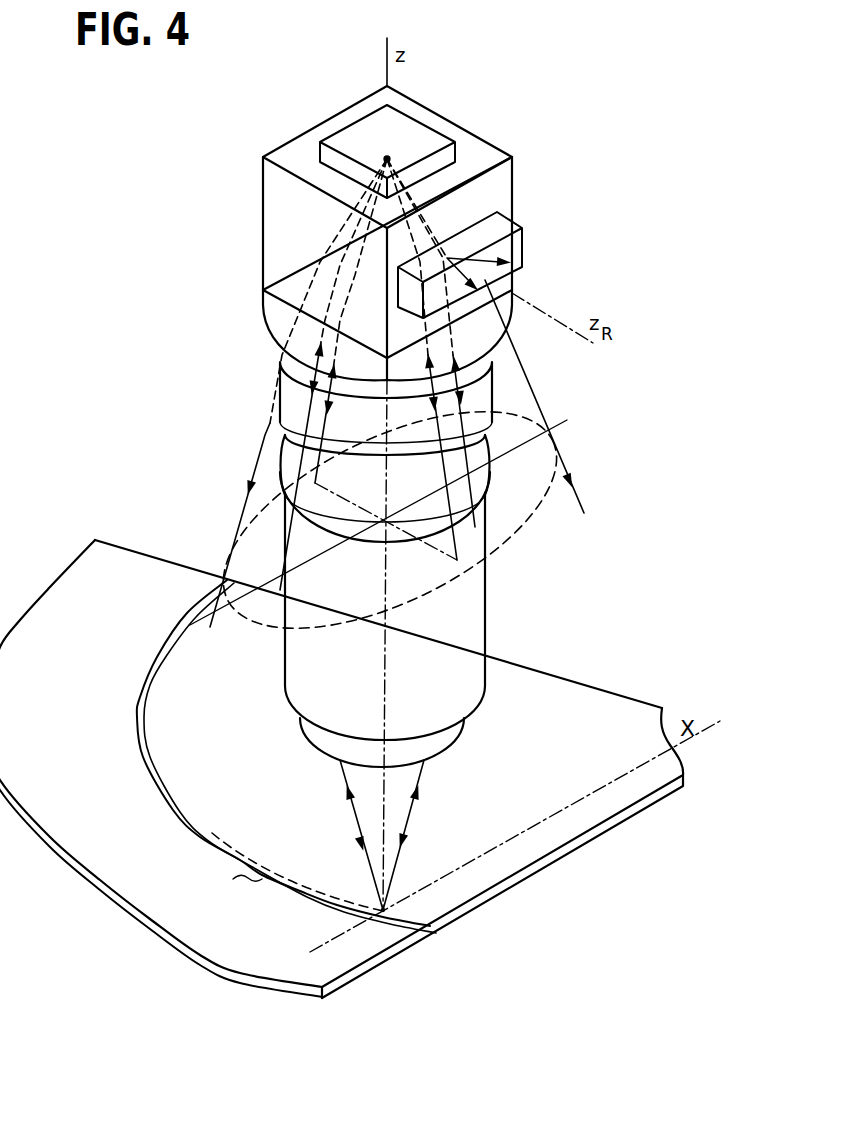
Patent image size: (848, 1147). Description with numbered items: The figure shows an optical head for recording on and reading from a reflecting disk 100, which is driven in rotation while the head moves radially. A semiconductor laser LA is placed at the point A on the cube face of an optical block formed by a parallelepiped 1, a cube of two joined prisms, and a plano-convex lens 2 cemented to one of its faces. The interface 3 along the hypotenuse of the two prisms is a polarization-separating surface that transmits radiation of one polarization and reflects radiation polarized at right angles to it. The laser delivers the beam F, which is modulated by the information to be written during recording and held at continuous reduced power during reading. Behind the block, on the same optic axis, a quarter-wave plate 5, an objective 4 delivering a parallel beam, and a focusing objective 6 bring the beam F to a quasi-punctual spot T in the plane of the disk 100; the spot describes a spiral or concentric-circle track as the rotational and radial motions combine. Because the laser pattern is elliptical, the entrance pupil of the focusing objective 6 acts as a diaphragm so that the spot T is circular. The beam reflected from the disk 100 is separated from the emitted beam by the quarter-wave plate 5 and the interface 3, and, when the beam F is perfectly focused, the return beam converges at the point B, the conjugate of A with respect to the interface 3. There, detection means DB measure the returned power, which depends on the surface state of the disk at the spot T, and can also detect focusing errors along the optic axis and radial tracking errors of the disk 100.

The parallelepiped 1 is at (500, 183).
The plano-convex lens 2 is at (270, 343).
The interface 3 is at (287, 273).
The objective 4 is at (476, 498).
The quarter-wave plate 5 is at (477, 388).
The focusing objective 6 is at (487, 638).
The reflecting disk 100 is at (353, 952).
The laser LA is at (348, 133).
The point A is at (384, 157).
The point B is at (507, 227).
The detection means DB is at (512, 264).
The beam F is at (397, 814).
The spot T is at (386, 910).